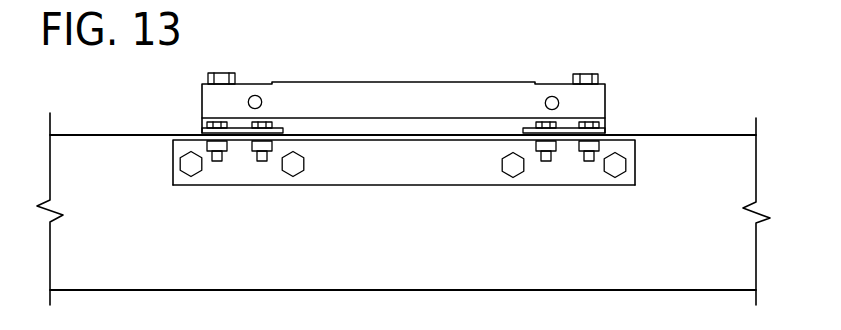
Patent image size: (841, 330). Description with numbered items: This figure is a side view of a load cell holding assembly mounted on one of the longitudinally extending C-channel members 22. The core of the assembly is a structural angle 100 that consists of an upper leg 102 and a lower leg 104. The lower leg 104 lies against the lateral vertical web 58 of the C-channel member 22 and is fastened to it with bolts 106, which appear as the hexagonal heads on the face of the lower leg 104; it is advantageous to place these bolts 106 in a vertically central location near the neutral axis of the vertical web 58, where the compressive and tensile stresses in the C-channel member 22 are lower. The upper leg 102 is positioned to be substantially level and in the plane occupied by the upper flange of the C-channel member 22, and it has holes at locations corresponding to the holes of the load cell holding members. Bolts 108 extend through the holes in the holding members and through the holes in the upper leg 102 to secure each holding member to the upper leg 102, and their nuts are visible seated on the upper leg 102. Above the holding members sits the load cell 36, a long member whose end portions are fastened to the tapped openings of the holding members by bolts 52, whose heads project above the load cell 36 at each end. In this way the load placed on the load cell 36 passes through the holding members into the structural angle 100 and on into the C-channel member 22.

The C-channel 22 is at (687, 175).
The load cell 36 is at (403, 97).
The bolt 52 is at (222, 76).
The vertical web 58 is at (79, 175).
The structural angle 100 is at (397, 170).
The upper leg 102 is at (377, 138).
The lower leg 104 is at (422, 172).
The bolt 106 is at (293, 166).
The bolt 108 is at (220, 121).